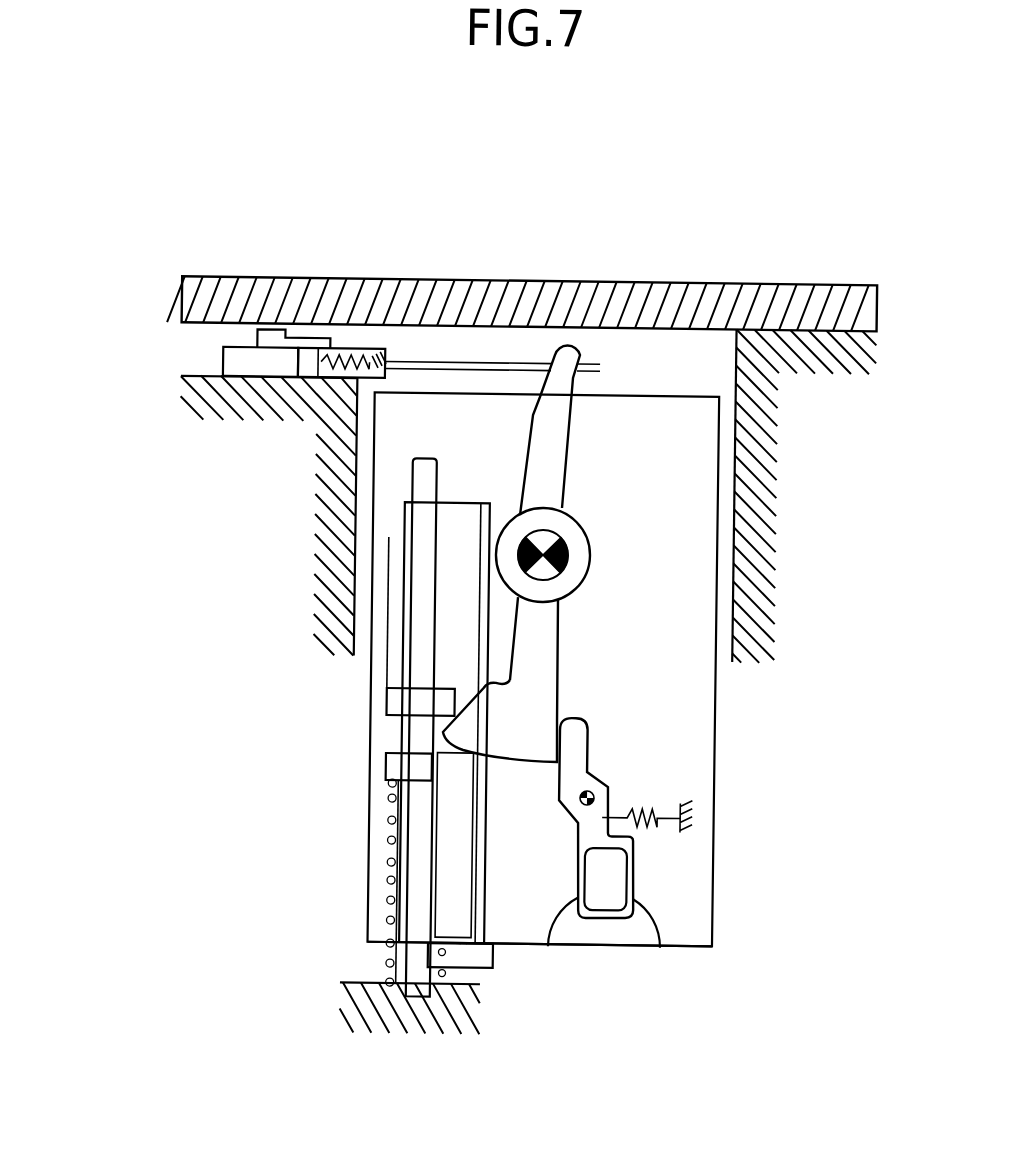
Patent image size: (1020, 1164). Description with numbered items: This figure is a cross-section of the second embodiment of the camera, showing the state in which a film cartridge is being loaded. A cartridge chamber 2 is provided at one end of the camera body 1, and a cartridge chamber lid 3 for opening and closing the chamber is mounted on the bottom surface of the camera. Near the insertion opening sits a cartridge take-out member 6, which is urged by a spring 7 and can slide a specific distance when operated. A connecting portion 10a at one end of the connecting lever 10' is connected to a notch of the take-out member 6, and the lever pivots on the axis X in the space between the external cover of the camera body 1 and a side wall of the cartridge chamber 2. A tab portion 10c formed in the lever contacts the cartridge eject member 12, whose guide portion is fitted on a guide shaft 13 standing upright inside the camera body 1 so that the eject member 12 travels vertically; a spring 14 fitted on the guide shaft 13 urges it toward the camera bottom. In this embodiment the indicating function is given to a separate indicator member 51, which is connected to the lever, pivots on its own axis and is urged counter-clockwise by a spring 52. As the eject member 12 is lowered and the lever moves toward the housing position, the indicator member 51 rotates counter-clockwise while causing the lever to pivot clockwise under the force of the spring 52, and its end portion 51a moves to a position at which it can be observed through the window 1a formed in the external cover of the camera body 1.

The camera body 1 is at (733, 354).
The window 1a is at (553, 948).
The cartridge chamber 2 is at (735, 449).
The cartridge chamber lid 3 is at (499, 281).
The cartridge take-out member 6 is at (220, 364).
The spring 7 is at (349, 359).
The connecting portion 10a is at (565, 344).
The lever 10' is at (597, 570).
The tab portion 10c is at (479, 724).
The axis X is at (567, 557).
The cartridge eject member 12 is at (400, 639).
The guide shaft 13 is at (412, 490).
The spring 14 is at (396, 842).
The indicator member 51 is at (610, 781).
The end portion 51a is at (665, 946).
The spring 52 is at (660, 820).